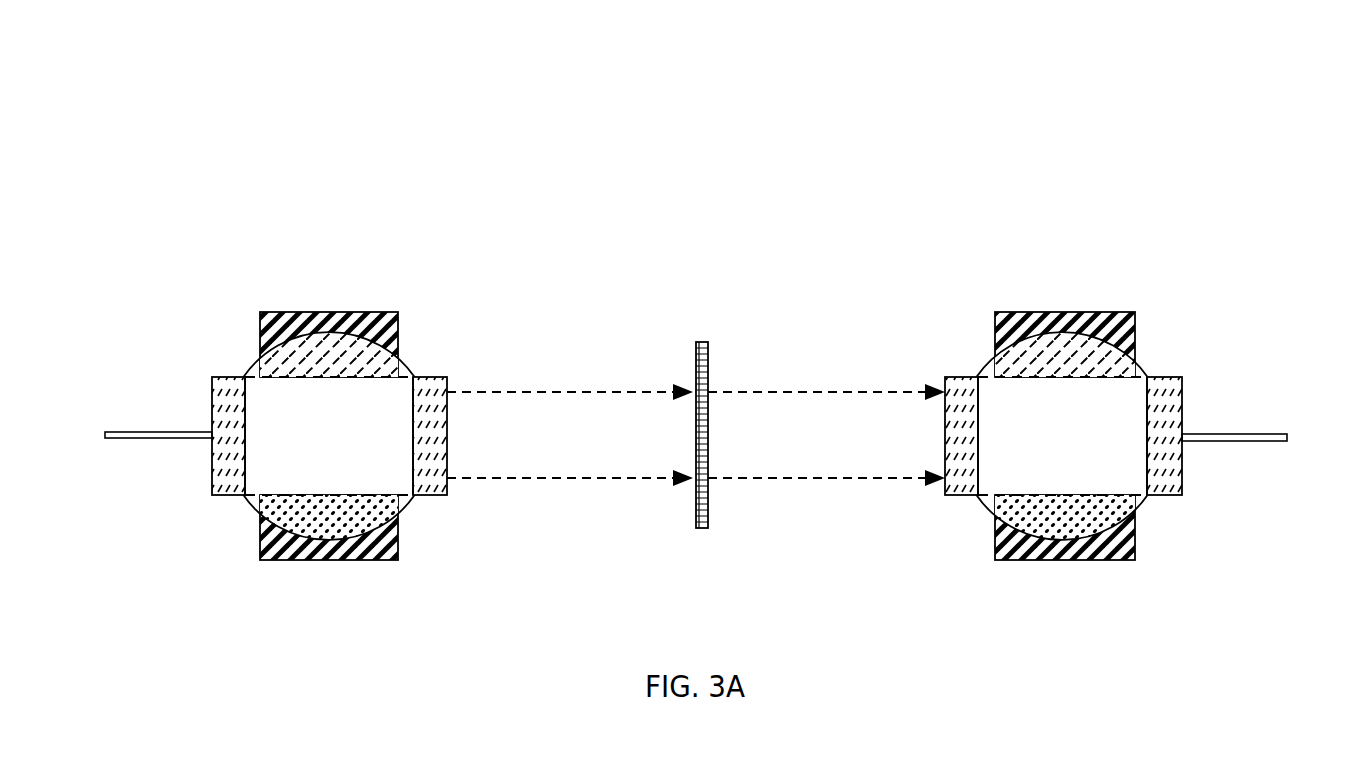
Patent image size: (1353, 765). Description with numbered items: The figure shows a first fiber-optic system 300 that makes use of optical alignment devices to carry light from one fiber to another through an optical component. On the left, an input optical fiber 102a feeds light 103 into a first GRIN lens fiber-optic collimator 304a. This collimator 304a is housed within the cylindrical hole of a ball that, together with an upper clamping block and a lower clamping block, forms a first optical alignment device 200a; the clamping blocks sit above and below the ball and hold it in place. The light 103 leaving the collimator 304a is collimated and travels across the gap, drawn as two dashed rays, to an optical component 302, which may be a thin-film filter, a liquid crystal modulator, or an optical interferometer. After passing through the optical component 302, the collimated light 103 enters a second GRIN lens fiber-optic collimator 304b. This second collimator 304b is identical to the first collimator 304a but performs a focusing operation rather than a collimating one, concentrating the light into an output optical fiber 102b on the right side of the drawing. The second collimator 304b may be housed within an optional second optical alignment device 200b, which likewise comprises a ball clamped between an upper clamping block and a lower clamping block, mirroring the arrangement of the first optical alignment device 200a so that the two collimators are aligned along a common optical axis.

The first fiber-optic system 300 is at (665, 68).
The first optical alignment device 200a is at (308, 230).
The second optical alignment device 200b is at (1068, 230).
The input optical fiber 102a is at (137, 432).
The output optical fiber 102b is at (1265, 433).
The light 103 is at (641, 409).
The optical component 302 is at (703, 340).
The first GRIN lens fiber-optic collimator 304a is at (445, 382).
The second GRIN lens fiber-optic collimator 304b is at (945, 378).